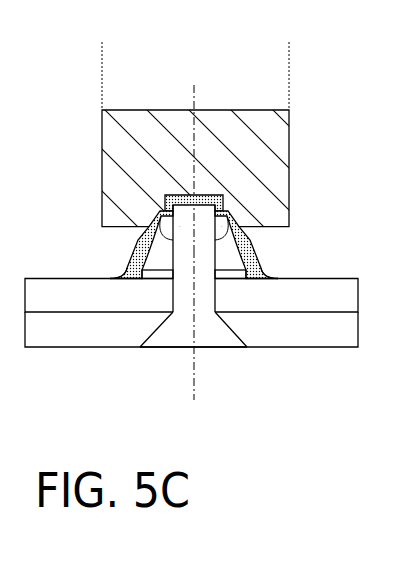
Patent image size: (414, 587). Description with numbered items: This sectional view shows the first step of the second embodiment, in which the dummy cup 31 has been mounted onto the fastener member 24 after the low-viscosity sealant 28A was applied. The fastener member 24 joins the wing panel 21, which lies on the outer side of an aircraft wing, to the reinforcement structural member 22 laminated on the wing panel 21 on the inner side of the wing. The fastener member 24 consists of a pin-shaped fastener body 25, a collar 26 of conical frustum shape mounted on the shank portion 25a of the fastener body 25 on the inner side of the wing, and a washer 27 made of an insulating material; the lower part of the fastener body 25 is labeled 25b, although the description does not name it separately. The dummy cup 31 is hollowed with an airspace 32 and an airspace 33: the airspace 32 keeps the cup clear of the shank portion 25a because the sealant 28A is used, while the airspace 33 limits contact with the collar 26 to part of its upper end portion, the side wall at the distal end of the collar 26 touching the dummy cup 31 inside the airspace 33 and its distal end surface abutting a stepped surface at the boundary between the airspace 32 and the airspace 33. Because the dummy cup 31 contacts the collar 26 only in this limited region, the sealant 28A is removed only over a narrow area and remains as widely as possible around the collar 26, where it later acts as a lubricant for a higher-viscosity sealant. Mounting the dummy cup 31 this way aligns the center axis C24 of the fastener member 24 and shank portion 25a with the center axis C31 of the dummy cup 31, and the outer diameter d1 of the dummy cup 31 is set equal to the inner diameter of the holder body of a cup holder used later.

The wing panel 21 is at (342, 348).
The reinforcement structural member 22 is at (356, 277).
The fastener member 24 is at (205, 411).
The center axis of the fastener member C24 is at (191, 377).
The fastener body 25 is at (156, 271).
The shank portion 25a is at (165, 205).
The lower portion of through electrode 25b is at (157, 350).
The collar 26 is at (228, 252).
The washer 27 is at (124, 276).
The sealant 28A is at (252, 264).
The dummy cup 31 is at (237, 110).
The center axis of the dummy cup C31 is at (191, 103).
The airspace 32 is at (227, 209).
The airspace 33 is at (142, 240).
The outer diameter of the dummy cup d1 is at (289, 52).